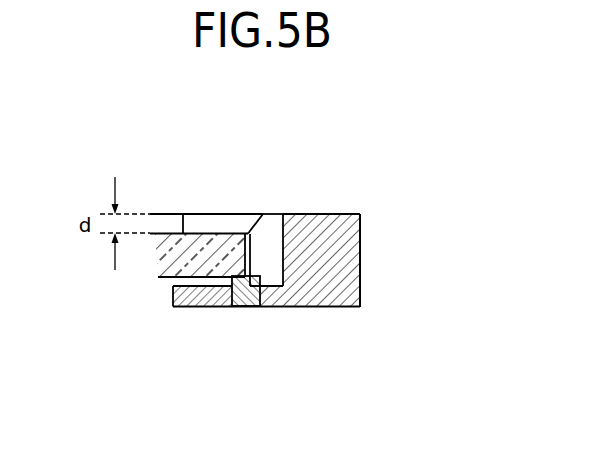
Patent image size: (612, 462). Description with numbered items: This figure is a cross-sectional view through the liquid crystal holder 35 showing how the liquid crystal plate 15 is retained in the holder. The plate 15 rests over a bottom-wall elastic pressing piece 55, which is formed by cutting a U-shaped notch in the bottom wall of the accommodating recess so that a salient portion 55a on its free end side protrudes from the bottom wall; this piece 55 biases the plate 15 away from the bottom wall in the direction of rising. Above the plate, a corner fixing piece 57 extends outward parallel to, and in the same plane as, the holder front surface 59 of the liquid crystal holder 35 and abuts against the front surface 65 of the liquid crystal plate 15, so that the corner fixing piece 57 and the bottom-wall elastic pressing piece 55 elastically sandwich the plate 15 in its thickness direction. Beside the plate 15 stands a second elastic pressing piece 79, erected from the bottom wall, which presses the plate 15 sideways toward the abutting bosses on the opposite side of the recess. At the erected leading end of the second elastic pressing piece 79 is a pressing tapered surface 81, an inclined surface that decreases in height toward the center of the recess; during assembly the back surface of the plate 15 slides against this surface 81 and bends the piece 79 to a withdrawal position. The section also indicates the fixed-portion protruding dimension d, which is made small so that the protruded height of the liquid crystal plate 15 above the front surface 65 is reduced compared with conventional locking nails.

The front surface 65 is at (165, 214).
The corner fixing piece 57 is at (212, 214).
The pressing tapered surface 81 is at (248, 214).
The second elastic pressing piece 79 is at (277, 221).
The holder front surface 59 is at (338, 214).
The liquid crystal plate 15 is at (170, 261).
The salient portion 55a is at (222, 293).
The bottom-wall elastic pressing piece 55 is at (242, 294).
The liquid crystal holder 35 is at (365, 294).